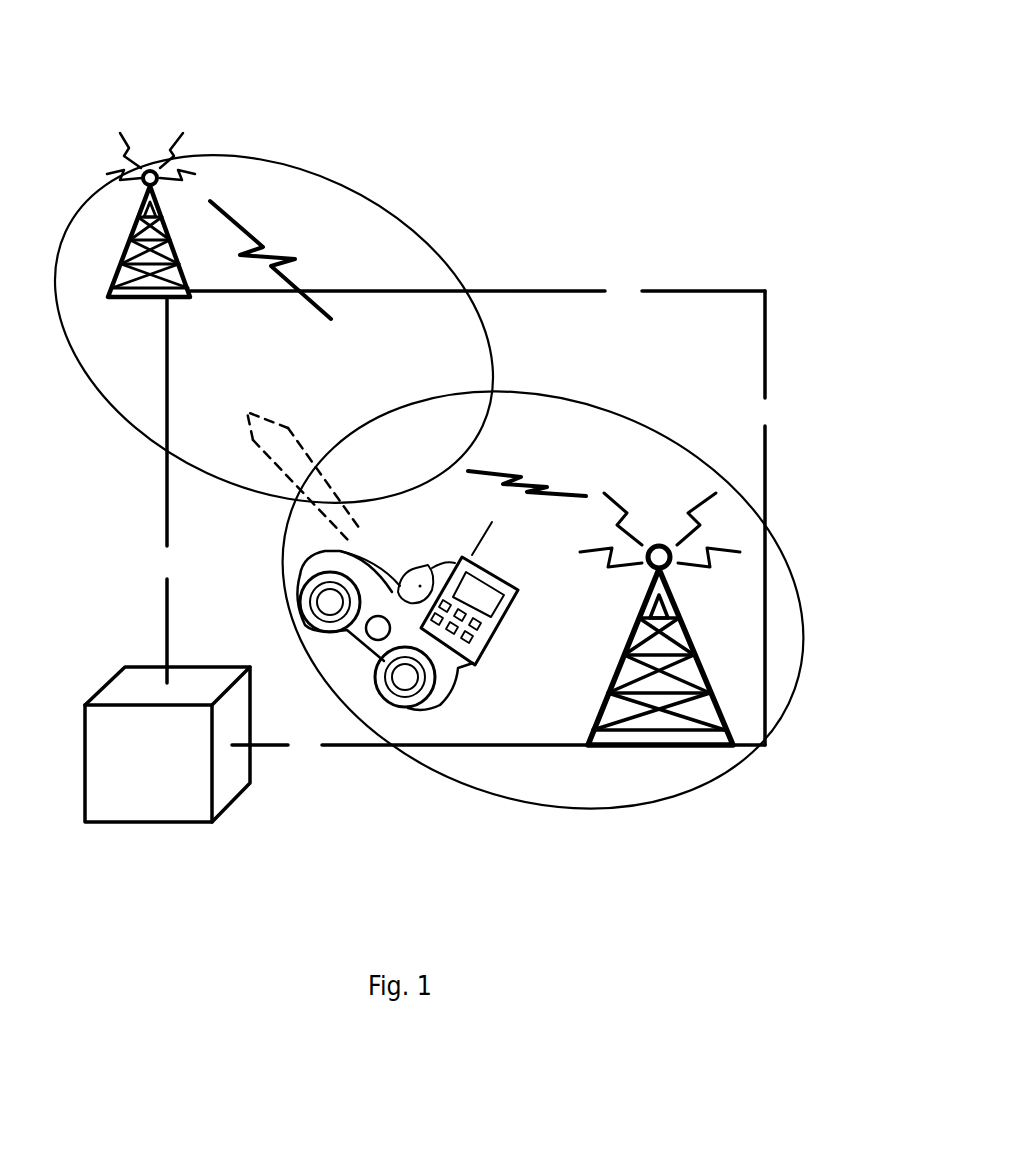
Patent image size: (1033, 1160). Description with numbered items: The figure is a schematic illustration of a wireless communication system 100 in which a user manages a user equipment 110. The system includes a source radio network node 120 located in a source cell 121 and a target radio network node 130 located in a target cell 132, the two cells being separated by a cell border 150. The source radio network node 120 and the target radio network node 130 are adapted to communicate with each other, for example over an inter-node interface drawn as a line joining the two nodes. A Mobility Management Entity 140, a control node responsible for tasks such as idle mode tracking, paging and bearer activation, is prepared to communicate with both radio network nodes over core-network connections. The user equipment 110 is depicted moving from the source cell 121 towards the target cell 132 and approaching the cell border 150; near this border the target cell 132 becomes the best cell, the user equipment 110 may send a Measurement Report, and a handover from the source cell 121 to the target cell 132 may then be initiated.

The wireless communication system 100 is at (663, 74).
The user equipment 110 is at (498, 630).
The source radio network node 120 is at (633, 750).
The source cell 121 is at (590, 790).
The target radio network node 130 is at (130, 237).
The target cell 132 is at (256, 182).
The Mobility Management Entity 140 is at (171, 746).
The cell border 150 is at (410, 447).